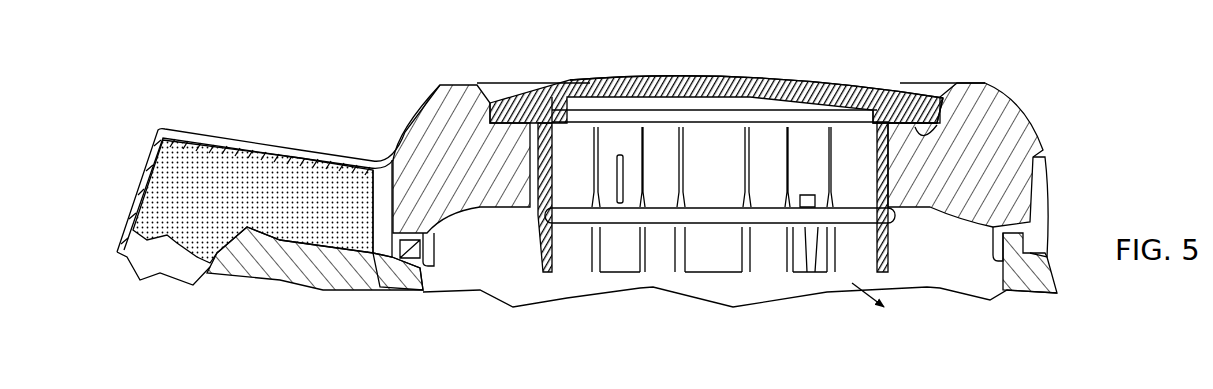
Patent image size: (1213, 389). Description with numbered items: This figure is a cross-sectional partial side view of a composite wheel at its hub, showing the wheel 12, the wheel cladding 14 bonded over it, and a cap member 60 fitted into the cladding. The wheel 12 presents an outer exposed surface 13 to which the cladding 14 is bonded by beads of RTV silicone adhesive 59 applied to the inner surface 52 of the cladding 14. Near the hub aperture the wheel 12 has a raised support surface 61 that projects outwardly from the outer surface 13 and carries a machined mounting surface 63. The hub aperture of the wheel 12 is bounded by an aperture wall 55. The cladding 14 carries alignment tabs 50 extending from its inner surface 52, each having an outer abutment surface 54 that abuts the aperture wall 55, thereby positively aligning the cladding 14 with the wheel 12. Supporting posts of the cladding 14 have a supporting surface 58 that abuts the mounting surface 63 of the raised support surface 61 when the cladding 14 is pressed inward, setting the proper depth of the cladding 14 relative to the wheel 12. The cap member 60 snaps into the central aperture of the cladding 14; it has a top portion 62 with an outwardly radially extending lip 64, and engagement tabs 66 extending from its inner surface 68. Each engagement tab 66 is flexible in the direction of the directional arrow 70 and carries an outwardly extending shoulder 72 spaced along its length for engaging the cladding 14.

The wheel 12 is at (230, 273).
The outer exposed surface 13 is at (297, 243).
The wheel cladding 14 is at (227, 143).
The alignment tab 50 is at (993, 237).
The inner surface 52 is at (985, 214).
The outer abutment surface 54 is at (1012, 290).
The aperture wall 55 is at (430, 272).
The supporting surface 58 is at (428, 292).
The RTV silicone adhesive 59 is at (163, 180).
The cap member 60 is at (582, 74).
The raised support surface 61 is at (378, 283).
The top portion 62 is at (745, 77).
The machined mounting surface 63 is at (420, 183).
The outwardly radially extending lip 64 is at (937, 117).
The engagement tab 66 is at (560, 212).
The inner surface 68 is at (710, 98).
The directional arrow 70 is at (858, 294).
The outwardly extending shoulder 72 is at (527, 220).